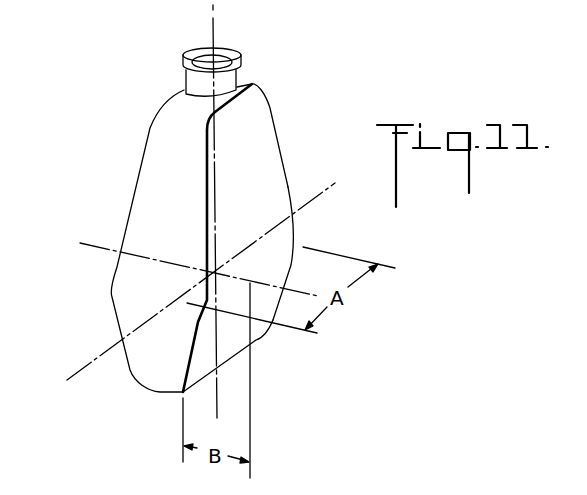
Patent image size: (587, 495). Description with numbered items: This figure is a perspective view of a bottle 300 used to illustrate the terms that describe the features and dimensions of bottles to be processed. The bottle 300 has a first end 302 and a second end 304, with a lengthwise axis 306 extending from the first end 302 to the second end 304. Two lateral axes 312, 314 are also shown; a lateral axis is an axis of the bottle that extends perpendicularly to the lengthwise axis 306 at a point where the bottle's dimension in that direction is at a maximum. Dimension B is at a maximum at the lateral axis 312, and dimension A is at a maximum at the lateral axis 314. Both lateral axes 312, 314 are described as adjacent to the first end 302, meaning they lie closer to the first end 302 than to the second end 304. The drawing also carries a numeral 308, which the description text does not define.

The bottle 300 is at (287, 130).
The first end 302 is at (257, 344).
The second end 304 is at (238, 50).
The lengthwise axis 306 is at (208, 33).
The side wall 308 is at (308, 237).
The lateral axis 312 is at (95, 243).
The lateral axis 314 is at (92, 353).